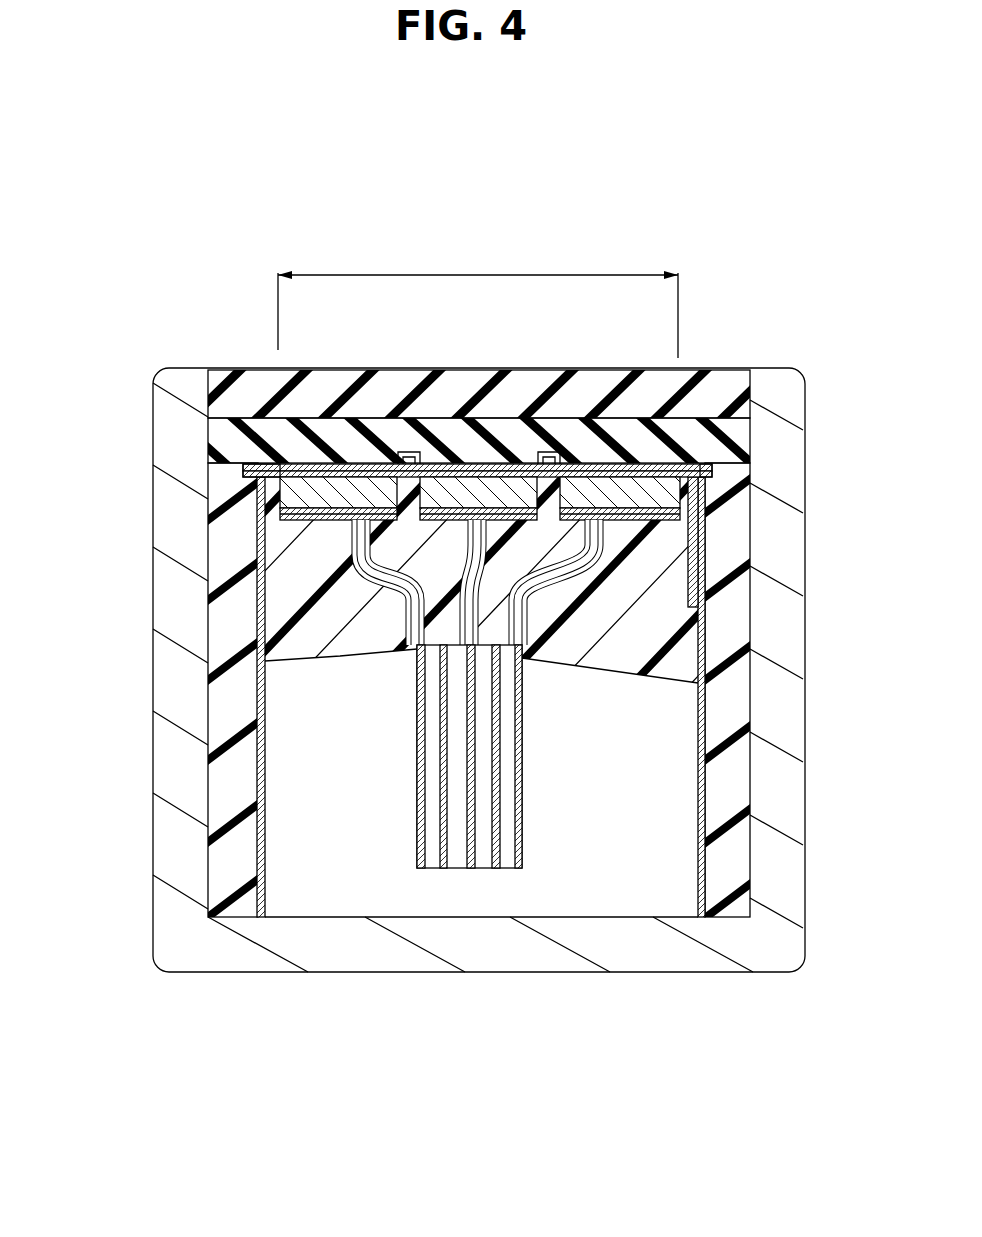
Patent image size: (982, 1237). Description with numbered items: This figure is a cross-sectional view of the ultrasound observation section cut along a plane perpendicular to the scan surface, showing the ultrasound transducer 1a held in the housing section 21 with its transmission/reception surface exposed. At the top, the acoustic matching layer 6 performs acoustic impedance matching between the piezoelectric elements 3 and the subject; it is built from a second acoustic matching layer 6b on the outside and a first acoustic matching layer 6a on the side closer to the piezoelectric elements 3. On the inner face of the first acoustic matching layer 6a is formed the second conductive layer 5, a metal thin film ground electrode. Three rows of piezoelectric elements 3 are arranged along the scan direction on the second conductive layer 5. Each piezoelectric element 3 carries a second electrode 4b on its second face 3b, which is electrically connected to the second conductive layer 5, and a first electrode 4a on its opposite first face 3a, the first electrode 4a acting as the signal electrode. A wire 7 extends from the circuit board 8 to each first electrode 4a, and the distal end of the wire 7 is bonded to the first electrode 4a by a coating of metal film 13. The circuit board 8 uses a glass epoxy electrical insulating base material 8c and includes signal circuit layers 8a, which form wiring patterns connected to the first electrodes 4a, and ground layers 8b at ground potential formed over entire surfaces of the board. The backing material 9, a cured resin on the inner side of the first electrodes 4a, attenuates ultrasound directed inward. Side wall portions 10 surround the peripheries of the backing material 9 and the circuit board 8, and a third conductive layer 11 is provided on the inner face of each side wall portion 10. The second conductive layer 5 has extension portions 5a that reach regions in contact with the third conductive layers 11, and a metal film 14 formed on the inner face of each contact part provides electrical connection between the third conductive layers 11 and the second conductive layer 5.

The ultrasound transducer 1a is at (226, 288).
The piezoelectric element 3 is at (287, 491).
The first face 3a is at (300, 512).
The second face 3b is at (262, 452).
The first electrode 4a is at (300, 585).
The second electrode 4b is at (369, 471).
The second conductive layer 5 is at (349, 464).
The extension portion 5a is at (712, 464).
The acoustic matching layer 6 is at (404, 416).
The first acoustic matching layer 6a is at (215, 440).
The second acoustic matching layer 6b is at (212, 383).
The wire 7 is at (408, 620).
The circuit board 8 is at (464, 850).
The signal circuit layer 8a is at (493, 868).
The ground layer 8b is at (447, 783).
The electrical insulating base material 8c is at (417, 860).
The backing material 9 is at (615, 655).
The side wall portion 10 is at (237, 893).
The third conductive layer 11 is at (703, 720).
The metal film 13 is at (360, 600).
The metal film 14 is at (697, 553).
The housing section 21 is at (806, 932).